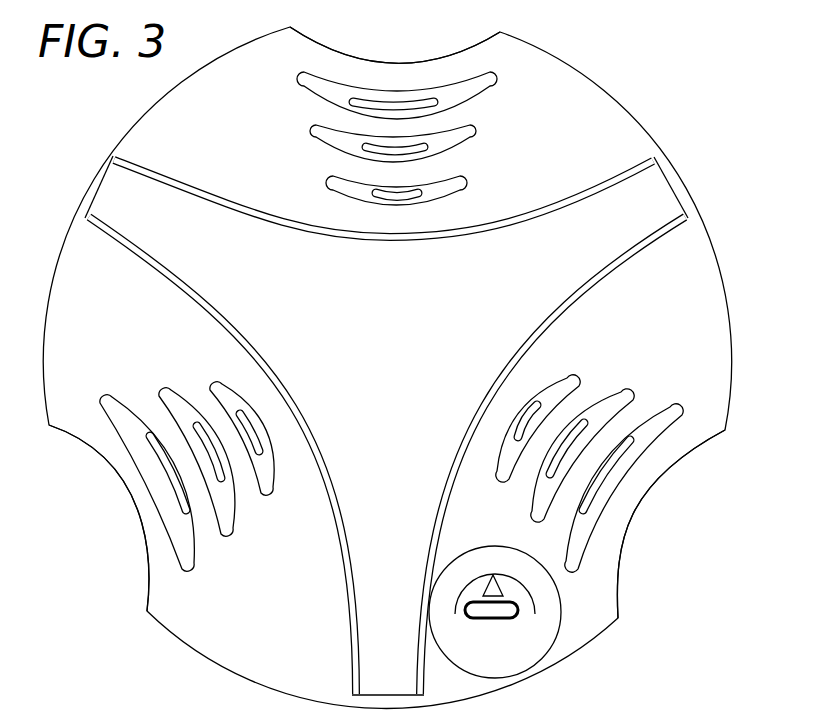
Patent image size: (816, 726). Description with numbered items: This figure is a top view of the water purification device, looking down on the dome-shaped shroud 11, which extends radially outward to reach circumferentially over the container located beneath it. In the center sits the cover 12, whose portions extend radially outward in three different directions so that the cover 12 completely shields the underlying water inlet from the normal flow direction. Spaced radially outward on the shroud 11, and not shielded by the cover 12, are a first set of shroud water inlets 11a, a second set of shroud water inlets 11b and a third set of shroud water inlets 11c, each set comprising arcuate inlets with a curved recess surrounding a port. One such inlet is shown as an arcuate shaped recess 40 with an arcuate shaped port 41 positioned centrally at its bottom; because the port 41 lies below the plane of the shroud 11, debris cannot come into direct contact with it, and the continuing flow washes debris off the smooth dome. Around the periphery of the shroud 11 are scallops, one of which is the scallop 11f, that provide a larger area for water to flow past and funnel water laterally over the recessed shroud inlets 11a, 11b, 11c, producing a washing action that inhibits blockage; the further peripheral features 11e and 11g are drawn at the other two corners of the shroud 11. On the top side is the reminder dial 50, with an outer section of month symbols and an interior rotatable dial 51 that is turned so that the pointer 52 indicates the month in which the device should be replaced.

The shroud 11 is at (616, 130).
The first set of shroud water inlets 11a is at (624, 390).
The second set of shroud water inlets 11b is at (471, 140).
The third set of shroud water inlets 11c is at (171, 392).
The top notch 11e is at (446, 57).
The scallop 11f is at (622, 551).
The left notch 11g is at (143, 536).
The cover 12 is at (596, 250).
The arcuate shaped recess 40 is at (683, 406).
The arcuate shaped port 41 is at (623, 447).
The reminder dial 50 is at (555, 630).
The interior rotatable dial 51 is at (470, 610).
The pointer 52 is at (491, 576).